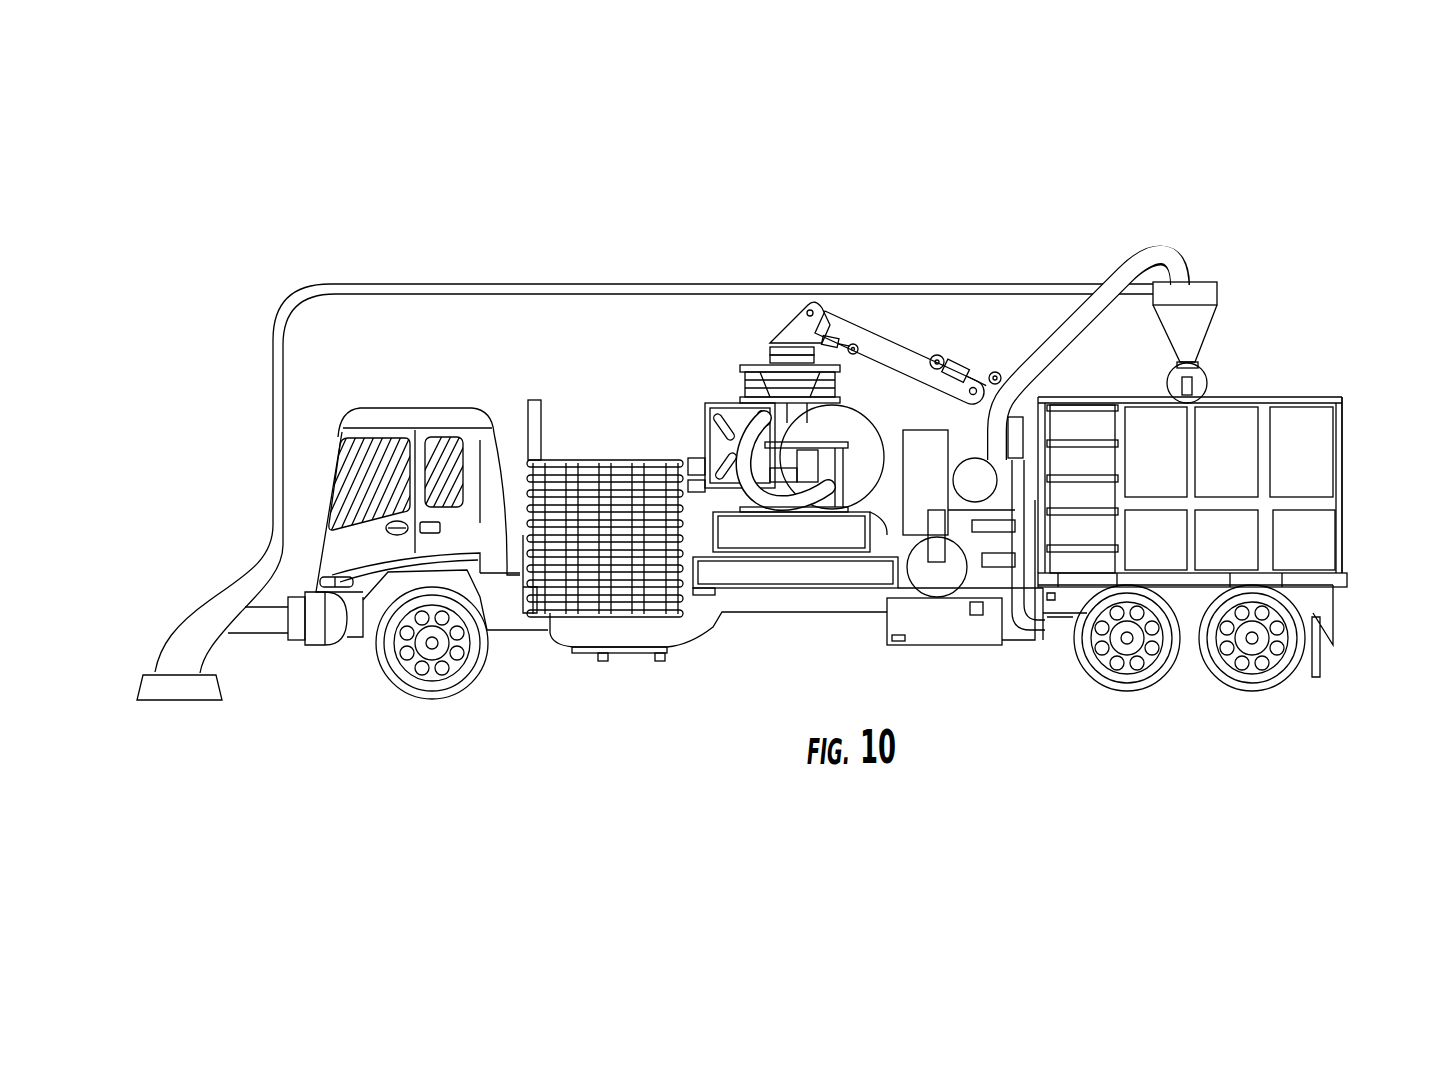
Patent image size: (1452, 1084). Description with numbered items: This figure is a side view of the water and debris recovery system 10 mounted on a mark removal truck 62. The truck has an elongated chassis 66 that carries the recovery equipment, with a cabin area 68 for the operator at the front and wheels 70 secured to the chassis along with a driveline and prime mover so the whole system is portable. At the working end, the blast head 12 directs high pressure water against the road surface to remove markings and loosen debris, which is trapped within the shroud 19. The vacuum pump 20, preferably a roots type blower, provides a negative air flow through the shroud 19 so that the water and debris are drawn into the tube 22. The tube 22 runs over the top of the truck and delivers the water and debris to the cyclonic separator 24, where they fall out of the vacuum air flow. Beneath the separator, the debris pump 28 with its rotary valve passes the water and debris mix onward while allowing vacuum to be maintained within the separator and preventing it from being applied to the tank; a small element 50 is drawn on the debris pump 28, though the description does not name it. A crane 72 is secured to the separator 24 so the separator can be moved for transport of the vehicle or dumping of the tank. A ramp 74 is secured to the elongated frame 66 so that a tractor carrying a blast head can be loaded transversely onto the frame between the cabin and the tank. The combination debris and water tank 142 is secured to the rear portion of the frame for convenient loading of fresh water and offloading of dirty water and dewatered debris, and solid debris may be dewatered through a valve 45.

The water and debris recovery system 10 is at (1378, 385).
The blast head 12 is at (140, 683).
The shroud 19 is at (217, 662).
The vacuum pump 20 is at (947, 480).
The tube 22 is at (273, 328).
The cyclonic separator 24 is at (1218, 295).
The debris pump 28 is at (1204, 370).
The valve 45 is at (1342, 590).
The valve actuator 50 is at (1195, 387).
The mark removal truck 62 is at (440, 427).
The elongated chassis 66 is at (490, 632).
The cabin area 68 is at (378, 433).
The wheels 70 is at (421, 697).
The crane 72 is at (892, 355).
The ramp 74 is at (583, 460).
The combination debris and water tank 142 is at (1307, 398).